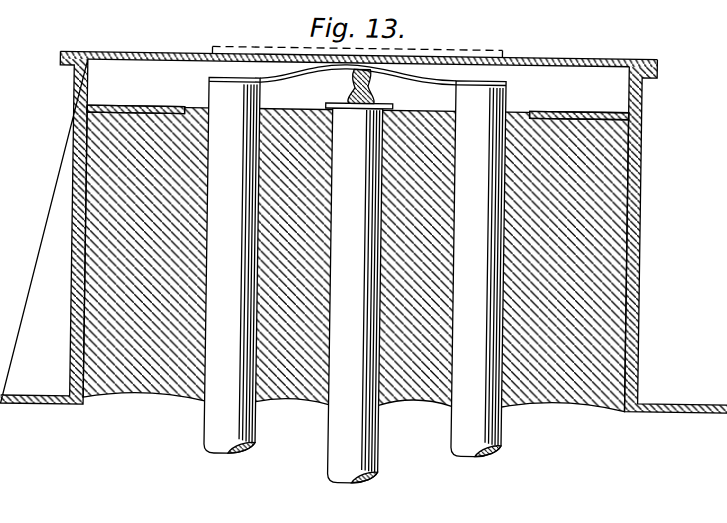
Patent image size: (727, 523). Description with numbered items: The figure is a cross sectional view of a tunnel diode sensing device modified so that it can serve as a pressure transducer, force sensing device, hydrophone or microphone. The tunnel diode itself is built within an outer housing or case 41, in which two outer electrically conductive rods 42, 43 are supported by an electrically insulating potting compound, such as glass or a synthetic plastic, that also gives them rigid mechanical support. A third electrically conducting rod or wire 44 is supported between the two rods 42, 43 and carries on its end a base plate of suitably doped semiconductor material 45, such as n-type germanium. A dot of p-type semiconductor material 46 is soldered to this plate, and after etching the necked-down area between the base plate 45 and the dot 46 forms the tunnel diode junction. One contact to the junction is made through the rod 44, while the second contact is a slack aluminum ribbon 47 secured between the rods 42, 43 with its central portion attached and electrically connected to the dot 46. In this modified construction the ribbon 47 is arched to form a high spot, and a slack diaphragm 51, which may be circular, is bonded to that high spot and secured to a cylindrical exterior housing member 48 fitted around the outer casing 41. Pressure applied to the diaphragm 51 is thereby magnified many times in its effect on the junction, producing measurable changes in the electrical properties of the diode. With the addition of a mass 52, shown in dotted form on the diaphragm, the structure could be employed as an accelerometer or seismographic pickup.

The outer housing or case 41 is at (568, 109).
The electrically conductive rod 42 is at (207, 428).
The electrically conductive rod 43 is at (454, 443).
The electrically conducting rod or wire 44 is at (331, 458).
The base plate of doped semiconductor material 45 is at (333, 104).
The semiconductor dot 46 is at (366, 80).
The slack aluminum ribbon 47 is at (422, 80).
The cylindrical exterior housing member 48 is at (72, 100).
The slack diaphragm 51 is at (140, 56).
The mass 52 is at (470, 50).